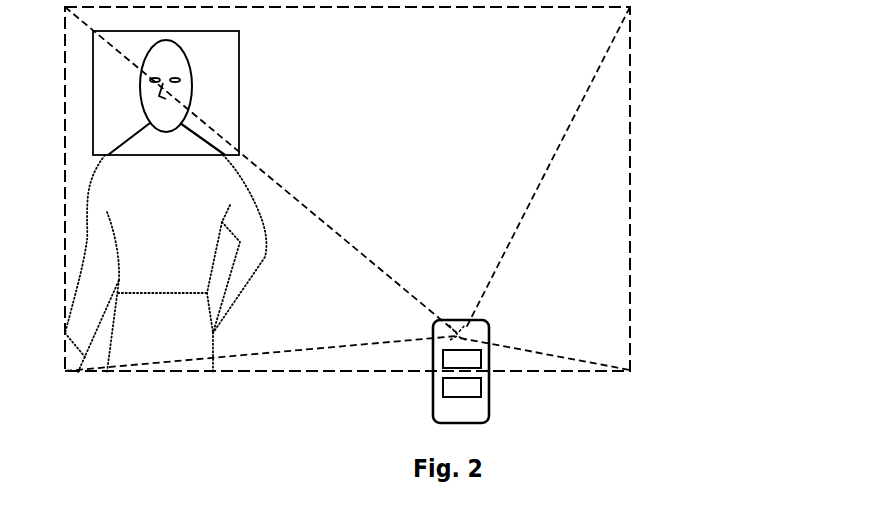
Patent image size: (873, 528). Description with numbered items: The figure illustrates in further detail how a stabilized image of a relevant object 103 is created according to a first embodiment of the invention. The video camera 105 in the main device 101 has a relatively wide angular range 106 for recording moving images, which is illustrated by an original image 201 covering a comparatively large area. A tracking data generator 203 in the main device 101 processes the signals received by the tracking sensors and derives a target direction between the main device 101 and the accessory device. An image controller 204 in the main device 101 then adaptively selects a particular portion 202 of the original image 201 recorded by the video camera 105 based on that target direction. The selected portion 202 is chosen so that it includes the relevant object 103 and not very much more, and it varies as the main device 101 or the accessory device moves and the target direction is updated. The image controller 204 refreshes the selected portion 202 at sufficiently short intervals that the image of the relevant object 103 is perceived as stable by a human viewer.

The main device 101 is at (488, 320).
The relevant object 103 is at (190, 66).
The video camera 105 is at (458, 333).
The angular range 106 is at (576, 110).
The original image 201 is at (630, 67).
The selected portion 202 is at (239, 130).
The tracking data generator 203 is at (481, 360).
The image controller 204 is at (481, 390).